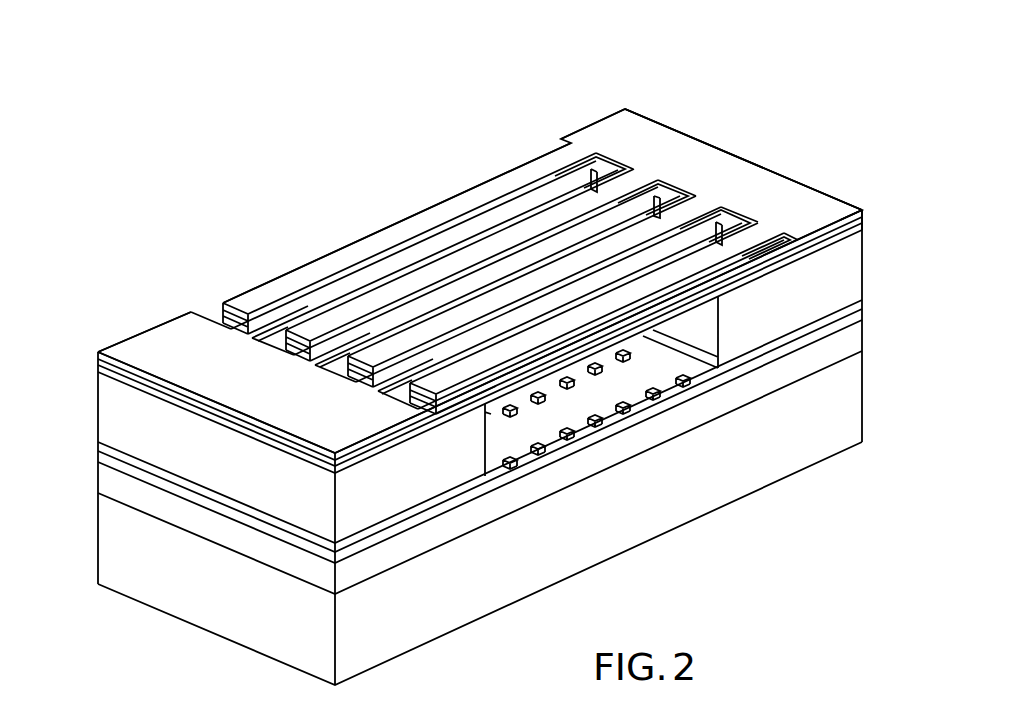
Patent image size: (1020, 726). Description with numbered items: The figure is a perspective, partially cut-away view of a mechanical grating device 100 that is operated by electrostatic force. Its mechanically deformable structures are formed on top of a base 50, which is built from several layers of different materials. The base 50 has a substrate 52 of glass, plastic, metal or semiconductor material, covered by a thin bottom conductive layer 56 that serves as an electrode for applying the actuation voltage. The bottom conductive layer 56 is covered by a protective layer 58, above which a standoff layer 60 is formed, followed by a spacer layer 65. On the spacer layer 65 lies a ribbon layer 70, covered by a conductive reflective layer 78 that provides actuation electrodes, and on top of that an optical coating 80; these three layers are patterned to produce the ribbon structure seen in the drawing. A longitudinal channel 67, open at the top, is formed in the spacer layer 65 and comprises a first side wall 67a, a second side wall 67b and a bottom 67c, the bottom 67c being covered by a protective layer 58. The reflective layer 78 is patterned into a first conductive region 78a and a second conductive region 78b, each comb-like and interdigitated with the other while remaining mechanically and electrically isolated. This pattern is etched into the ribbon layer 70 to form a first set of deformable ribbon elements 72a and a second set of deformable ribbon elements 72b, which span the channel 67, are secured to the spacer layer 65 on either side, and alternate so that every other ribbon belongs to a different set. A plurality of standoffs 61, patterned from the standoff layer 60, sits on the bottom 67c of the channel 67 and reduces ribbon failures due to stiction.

The mechanical grating device 100 is at (497, 130).
The base 50 is at (233, 603).
The substrate 52 is at (510, 587).
The bottom conductive layer 56 is at (100, 488).
The protective layer 58 is at (462, 502).
The standoff layer 60 is at (100, 443).
The standoffs 61 is at (687, 381).
The spacer layer 65 is at (107, 422).
The channel 67 is at (630, 367).
The first side wall 67a is at (488, 440).
The second side wall 67b is at (708, 335).
The bottom 67c is at (590, 393).
The ribbon layer 70 is at (98, 374).
The first set of deformable ribbon elements 72a is at (487, 327).
The second set of deformable ribbon elements 72b is at (590, 253).
The reflective layer 78 is at (96, 360).
The first conductive region 78a is at (165, 360).
The second conductive region 78b is at (643, 148).
The optical coating 80 is at (864, 210).